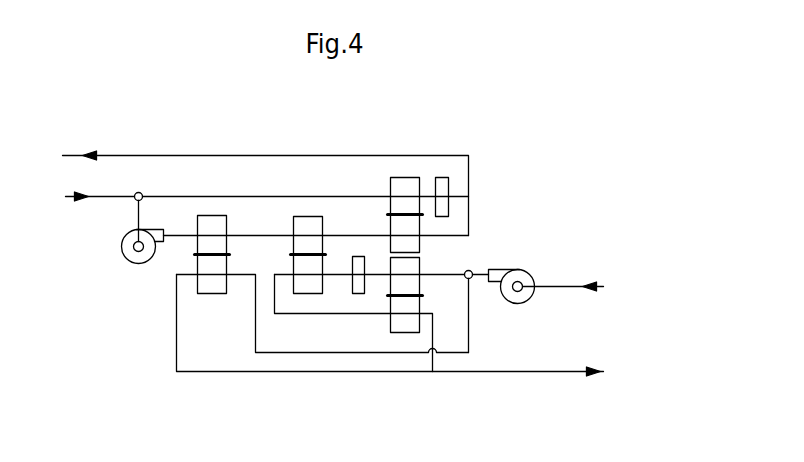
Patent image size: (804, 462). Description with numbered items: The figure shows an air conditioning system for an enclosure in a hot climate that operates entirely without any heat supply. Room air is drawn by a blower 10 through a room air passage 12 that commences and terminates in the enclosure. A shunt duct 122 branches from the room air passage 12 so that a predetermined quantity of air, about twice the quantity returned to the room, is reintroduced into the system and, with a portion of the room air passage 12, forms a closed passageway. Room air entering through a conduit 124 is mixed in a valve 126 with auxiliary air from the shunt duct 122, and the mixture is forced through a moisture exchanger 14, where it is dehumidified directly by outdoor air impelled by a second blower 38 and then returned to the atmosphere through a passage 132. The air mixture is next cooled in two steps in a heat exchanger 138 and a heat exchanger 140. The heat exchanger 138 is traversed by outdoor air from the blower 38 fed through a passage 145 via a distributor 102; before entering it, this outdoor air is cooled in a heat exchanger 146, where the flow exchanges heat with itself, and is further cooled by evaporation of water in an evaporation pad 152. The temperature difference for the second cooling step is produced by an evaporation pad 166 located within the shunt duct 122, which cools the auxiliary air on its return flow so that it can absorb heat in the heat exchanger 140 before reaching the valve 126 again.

The blower 10 is at (122, 249).
The room air passage 12 is at (220, 155).
The moisture exchanger 14 is at (216, 222).
The blower 38 is at (523, 295).
The distributor 102 is at (472, 266).
The shunt duct 122 is at (327, 195).
The conduit 124 is at (100, 197).
The valve 126 is at (139, 192).
The passage 132 is at (295, 353).
The heat exchanger 138 is at (305, 225).
The heat exchanger 140 is at (408, 186).
The passage 145 is at (414, 264).
The heat exchanger 146 is at (447, 272).
The evaporation pad 152 is at (358, 262).
The evaporation pad 166 is at (443, 186).